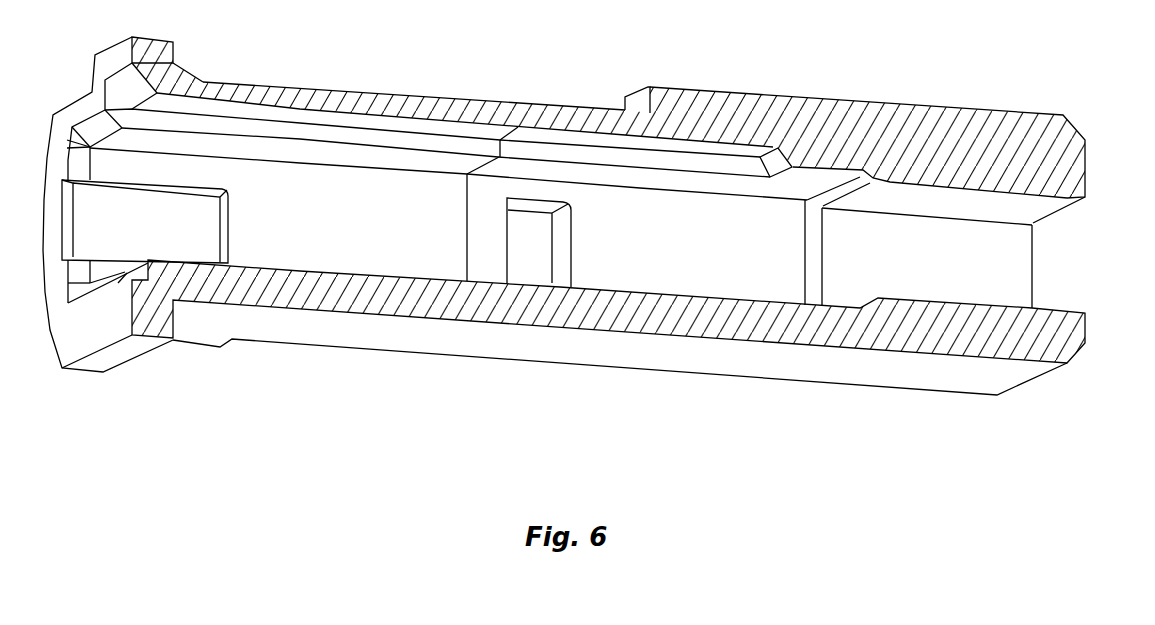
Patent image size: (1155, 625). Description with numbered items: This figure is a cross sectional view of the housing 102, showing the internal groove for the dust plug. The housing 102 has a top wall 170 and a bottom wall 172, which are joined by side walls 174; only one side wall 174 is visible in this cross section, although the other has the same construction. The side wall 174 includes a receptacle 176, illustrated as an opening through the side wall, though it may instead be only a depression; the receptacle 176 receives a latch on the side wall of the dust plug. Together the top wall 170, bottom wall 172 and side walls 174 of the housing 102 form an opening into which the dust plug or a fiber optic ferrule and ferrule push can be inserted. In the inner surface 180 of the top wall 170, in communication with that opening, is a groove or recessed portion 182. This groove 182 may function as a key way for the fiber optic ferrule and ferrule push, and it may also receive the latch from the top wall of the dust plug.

The housing 102 is at (746, 90).
The top wall 170 is at (831, 98).
The bottom wall 172 is at (702, 358).
The side wall 174 is at (1017, 268).
The receptacle 176 is at (560, 253).
The inner surface 180 is at (421, 152).
The groove 182 is at (570, 143).